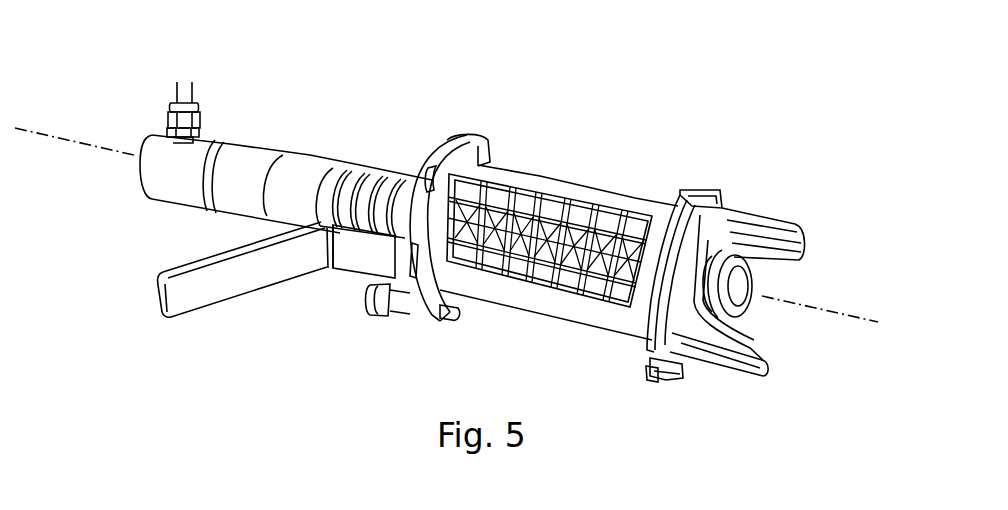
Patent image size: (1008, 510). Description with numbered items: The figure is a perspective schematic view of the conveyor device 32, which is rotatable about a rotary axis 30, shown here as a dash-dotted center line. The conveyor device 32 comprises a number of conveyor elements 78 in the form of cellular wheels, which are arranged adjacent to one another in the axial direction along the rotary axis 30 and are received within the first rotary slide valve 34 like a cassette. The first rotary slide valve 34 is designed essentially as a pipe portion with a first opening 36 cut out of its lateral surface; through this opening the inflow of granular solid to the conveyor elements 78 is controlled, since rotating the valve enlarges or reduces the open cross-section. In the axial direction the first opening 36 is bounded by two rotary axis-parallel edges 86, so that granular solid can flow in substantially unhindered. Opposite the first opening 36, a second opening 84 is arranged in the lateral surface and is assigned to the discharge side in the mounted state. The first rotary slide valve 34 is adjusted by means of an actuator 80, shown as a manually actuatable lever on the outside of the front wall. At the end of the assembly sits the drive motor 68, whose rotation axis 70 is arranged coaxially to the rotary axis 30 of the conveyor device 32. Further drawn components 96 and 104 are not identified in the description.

The rotary axis 30 is at (832, 308).
The rotation axis 70 is at (37, 130).
The drive motor 68 is at (235, 153).
The actuator 80 is at (188, 298).
The flange 96 is at (468, 142).
The first rotary slide valve 34 is at (643, 205).
The conveyor device 32 is at (528, 153).
The rotary axis-parallel edges 86 is at (555, 197).
The conveyor elements 78 is at (498, 265).
The first opening 36 is at (617, 211).
The second opening 84 is at (610, 372).
The latch element 104 is at (688, 387).